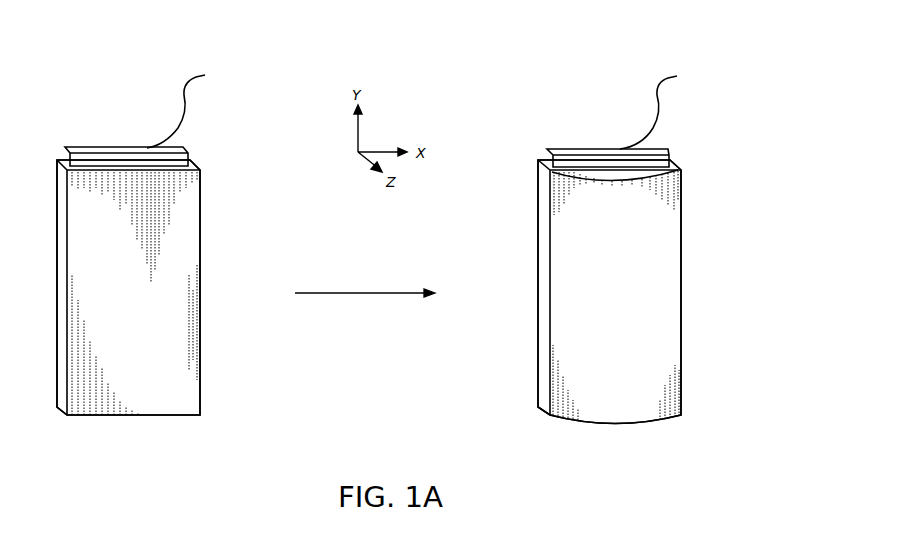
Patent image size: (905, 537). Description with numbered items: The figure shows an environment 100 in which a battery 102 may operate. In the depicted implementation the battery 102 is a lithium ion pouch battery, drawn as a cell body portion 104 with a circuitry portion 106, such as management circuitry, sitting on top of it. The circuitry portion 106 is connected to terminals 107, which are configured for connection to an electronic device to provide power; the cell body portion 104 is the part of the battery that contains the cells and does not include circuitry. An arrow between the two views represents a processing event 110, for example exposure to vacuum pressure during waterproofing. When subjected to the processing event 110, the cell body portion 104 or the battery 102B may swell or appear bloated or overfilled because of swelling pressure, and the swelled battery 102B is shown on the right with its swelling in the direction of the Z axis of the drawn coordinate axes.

The environment 100 is at (706, 51).
The battery 102 is at (132, 415).
The swelled battery 102B is at (630, 426).
The cell body portion 104 is at (200, 196).
The circuitry portion 106 is at (107, 147).
The terminals 107 is at (185, 112).
The processing event 110 is at (367, 293).